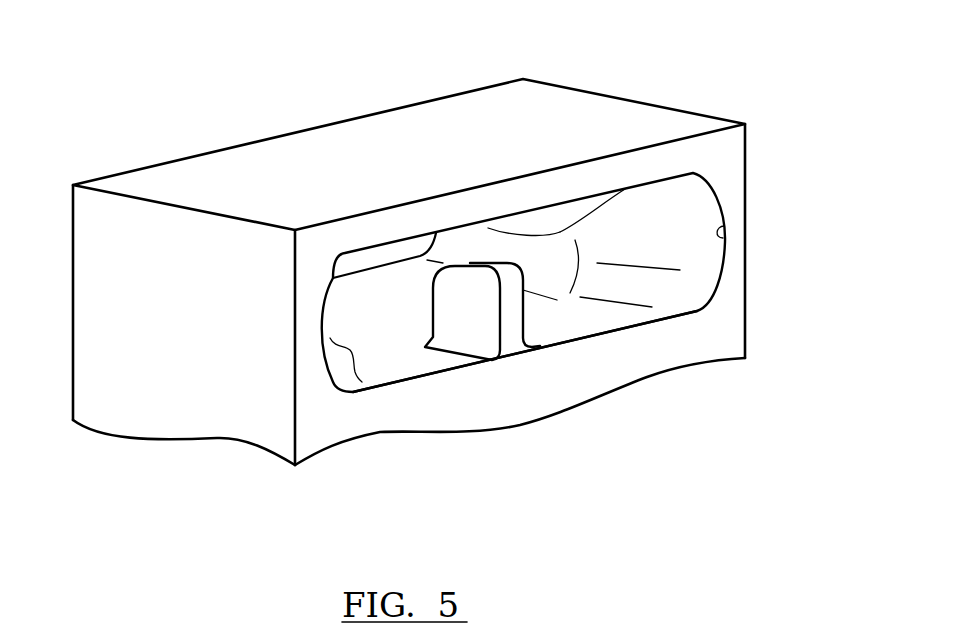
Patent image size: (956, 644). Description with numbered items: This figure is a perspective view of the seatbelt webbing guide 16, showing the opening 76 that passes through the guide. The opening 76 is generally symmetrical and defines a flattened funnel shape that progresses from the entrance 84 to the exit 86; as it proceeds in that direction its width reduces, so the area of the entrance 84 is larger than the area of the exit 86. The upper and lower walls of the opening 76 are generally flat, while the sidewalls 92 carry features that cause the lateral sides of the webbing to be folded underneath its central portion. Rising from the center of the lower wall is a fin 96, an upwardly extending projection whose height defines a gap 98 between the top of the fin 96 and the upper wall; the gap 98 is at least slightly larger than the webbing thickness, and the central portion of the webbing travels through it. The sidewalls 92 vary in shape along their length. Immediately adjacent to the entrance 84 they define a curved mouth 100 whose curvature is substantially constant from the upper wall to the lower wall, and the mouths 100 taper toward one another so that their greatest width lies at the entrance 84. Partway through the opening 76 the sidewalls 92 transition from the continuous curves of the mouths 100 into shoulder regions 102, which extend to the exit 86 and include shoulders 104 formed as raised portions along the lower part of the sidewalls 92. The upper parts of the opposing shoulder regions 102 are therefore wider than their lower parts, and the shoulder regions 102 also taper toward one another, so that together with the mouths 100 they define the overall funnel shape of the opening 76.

The webbing guide 16 is at (110, 92).
The opening 76 is at (396, 396).
The entrance 84 is at (722, 229).
The exit 86 is at (377, 268).
The sidewalls 92 is at (687, 210).
The fin 96 is at (480, 318).
The gap 98 is at (474, 246).
The curved mouth 100 is at (650, 250).
The shoulder regions 102 is at (558, 242).
The shoulders 104 is at (537, 233).